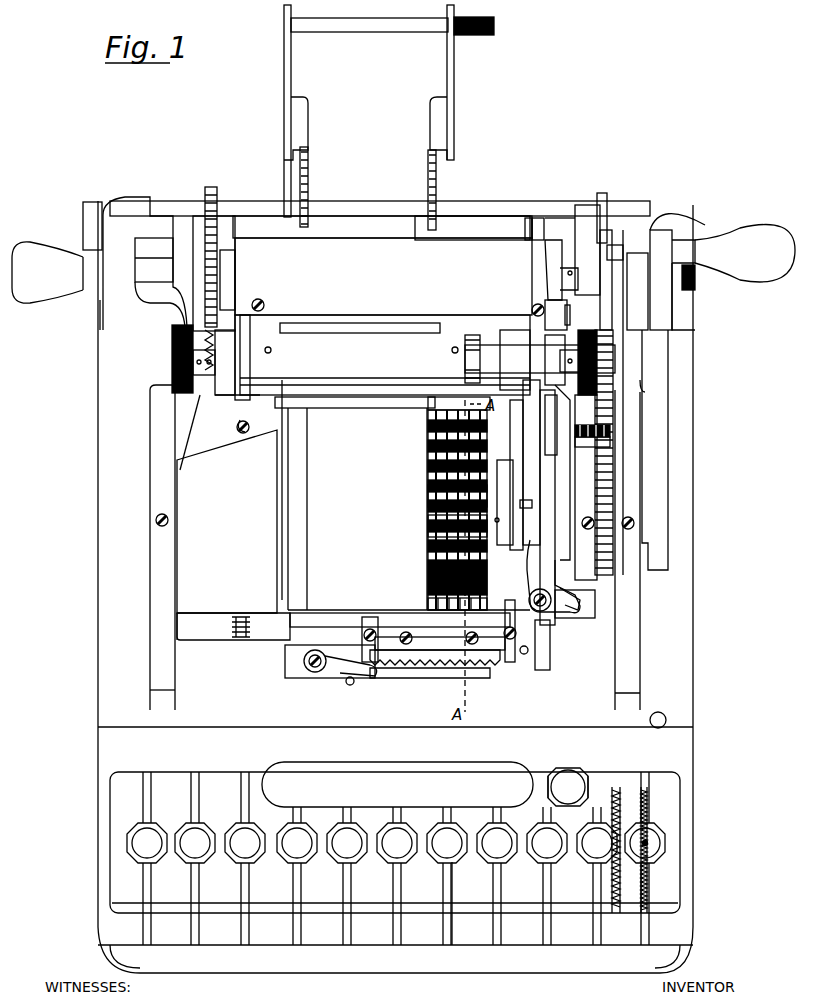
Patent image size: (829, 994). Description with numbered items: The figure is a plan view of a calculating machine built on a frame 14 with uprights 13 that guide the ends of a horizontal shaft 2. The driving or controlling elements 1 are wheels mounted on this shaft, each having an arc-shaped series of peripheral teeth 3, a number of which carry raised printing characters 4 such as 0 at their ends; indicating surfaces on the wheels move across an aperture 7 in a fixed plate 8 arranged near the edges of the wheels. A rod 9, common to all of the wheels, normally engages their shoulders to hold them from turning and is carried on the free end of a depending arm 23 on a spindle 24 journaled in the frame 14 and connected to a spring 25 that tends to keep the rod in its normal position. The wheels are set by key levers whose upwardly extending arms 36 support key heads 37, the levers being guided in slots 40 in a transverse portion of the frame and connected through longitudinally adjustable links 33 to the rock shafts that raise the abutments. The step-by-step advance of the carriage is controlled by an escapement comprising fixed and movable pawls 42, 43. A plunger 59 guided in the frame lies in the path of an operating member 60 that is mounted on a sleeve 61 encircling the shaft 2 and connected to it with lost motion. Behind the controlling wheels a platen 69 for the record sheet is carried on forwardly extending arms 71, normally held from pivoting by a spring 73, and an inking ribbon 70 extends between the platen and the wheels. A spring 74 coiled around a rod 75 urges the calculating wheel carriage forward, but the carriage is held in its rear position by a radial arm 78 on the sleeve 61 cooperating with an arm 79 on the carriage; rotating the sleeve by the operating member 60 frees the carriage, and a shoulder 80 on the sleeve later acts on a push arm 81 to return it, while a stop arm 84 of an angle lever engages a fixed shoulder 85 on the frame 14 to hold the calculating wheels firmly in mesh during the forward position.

The controlling elements 1 is at (430, 508).
The horizontal shaft 2 is at (292, 520).
The peripheral teeth 3 is at (430, 538).
The printing characters 4 is at (430, 453).
The printing character zero 0 is at (428, 604).
The aperture 7 is at (452, 613).
The fixed plate 8 is at (438, 613).
The rod 9 is at (490, 422).
The uprights 13 is at (157, 548).
The frame 14 is at (108, 600).
The depending arm 23 is at (540, 428).
The spindle 24 is at (605, 432).
The spring 25 is at (605, 447).
The links 33 is at (548, 815).
The upwardly extending arms 36 is at (445, 887).
The key heads 37 is at (455, 855).
The slots 40 is at (592, 930).
The fixed pawl 42 is at (390, 672).
The movable pawl 43 is at (365, 676).
The plunger 59 is at (658, 712).
The operating member 60 is at (662, 512).
The sleeve 61 is at (645, 527).
The platen 69 is at (352, 385).
The inking ribbon 70 is at (402, 503).
The arms 71 is at (565, 318).
The spring 73 is at (555, 272).
The spring 74 is at (232, 626).
The rod 75 is at (250, 626).
The radial arm 78 is at (585, 495).
The arm 79 is at (557, 472).
The shoulder 80 is at (540, 498).
The push arm 81 is at (532, 472).
The stop arm 84 is at (525, 228).
The fixed shoulder 85 is at (520, 222).